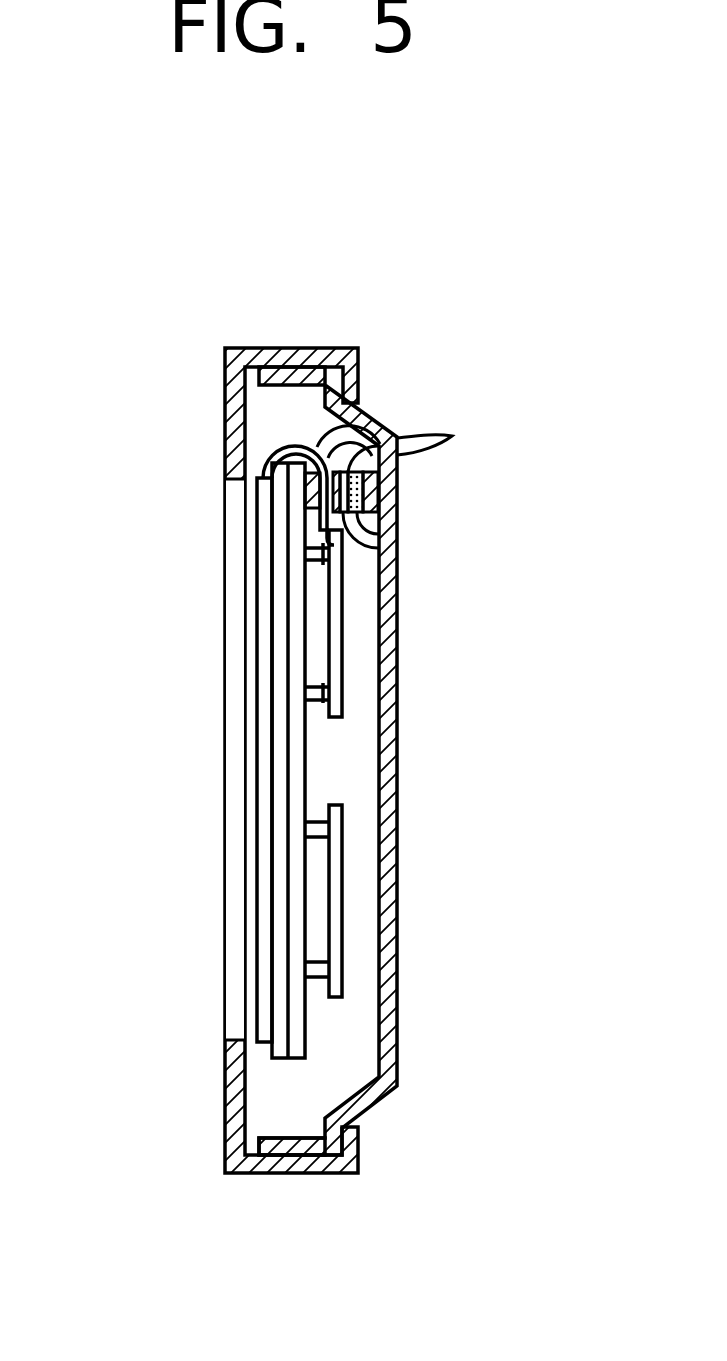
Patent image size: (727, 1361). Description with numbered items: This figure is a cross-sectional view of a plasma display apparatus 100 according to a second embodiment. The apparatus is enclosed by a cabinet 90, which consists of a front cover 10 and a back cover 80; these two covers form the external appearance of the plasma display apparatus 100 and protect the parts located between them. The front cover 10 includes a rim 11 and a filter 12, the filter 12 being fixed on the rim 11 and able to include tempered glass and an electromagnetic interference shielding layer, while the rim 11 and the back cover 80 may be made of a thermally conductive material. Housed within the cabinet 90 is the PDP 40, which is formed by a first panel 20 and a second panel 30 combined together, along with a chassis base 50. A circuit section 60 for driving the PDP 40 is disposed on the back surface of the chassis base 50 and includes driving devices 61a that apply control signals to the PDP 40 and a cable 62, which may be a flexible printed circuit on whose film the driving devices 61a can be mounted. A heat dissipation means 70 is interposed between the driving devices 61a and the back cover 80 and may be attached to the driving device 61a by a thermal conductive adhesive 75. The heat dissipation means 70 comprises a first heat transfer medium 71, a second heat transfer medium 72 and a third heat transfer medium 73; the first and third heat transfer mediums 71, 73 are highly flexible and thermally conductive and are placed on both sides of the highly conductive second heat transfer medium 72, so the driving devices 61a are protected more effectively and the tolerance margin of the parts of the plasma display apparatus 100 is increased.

The plasma display apparatus 100 is at (172, 1118).
The cabinet 90 is at (327, 318).
The front cover 10 is at (115, 447).
The rim 11 is at (237, 446).
The filter 12 is at (240, 527).
The PDP 40 is at (98, 790).
The first panel 20 is at (260, 794).
The second panel 30 is at (280, 867).
The chassis base 50 is at (295, 970).
The circuit section 60 is at (342, 678).
The driving device 61a is at (305, 507).
The cable 62 is at (380, 424).
The heat dissipation means 70 is at (505, 470).
The first heat transfer medium 71 is at (378, 548).
The second heat transfer medium 72 is at (397, 528).
The third heat transfer medium 73 is at (397, 488).
The thermal conductive adhesive 75 is at (447, 430).
The back cover 80 is at (295, 1143).